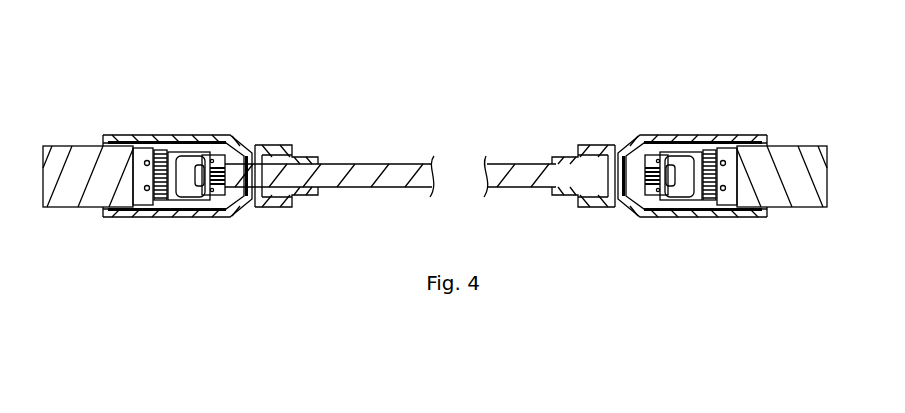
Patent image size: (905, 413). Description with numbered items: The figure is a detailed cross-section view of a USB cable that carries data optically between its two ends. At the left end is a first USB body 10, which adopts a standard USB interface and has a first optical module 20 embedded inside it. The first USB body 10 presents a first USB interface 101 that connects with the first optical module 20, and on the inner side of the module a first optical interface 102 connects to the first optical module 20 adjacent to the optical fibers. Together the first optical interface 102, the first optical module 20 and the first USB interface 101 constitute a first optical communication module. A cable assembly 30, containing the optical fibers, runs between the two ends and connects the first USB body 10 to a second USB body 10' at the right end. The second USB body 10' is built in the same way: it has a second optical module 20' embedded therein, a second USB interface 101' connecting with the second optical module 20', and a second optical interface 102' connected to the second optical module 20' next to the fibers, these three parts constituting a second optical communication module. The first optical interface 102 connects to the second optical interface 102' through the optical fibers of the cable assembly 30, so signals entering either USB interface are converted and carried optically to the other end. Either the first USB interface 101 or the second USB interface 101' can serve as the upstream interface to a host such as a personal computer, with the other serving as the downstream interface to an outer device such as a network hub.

The first USB interface 101 is at (88, 141).
The first USB body 10 is at (177, 146).
The first optical module 20 is at (189, 137).
The first optical interface 102 is at (221, 135).
The cable assembly 30 is at (374, 166).
The second USB interface 101' is at (782, 141).
The second USB body 10' is at (692, 146).
The second optical module 20' is at (681, 137).
The second optical interface 102' is at (657, 135).